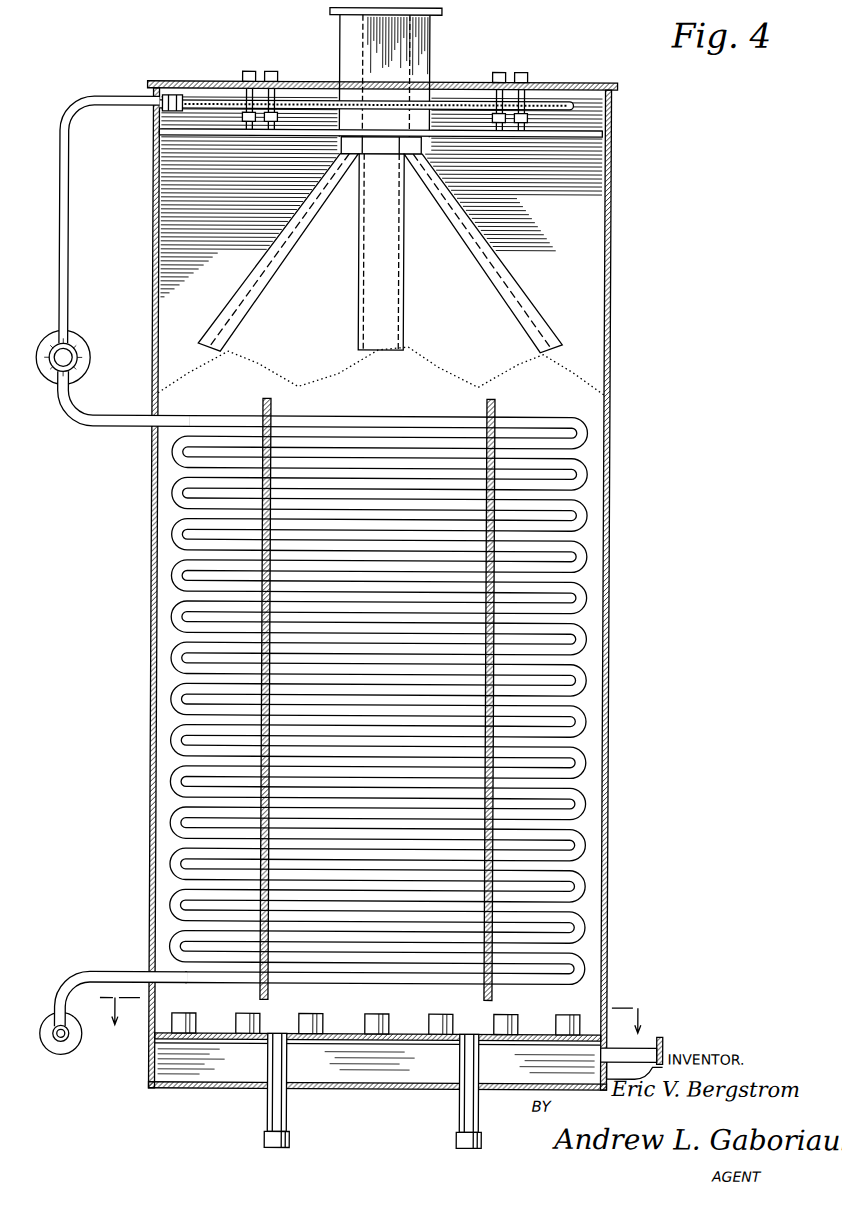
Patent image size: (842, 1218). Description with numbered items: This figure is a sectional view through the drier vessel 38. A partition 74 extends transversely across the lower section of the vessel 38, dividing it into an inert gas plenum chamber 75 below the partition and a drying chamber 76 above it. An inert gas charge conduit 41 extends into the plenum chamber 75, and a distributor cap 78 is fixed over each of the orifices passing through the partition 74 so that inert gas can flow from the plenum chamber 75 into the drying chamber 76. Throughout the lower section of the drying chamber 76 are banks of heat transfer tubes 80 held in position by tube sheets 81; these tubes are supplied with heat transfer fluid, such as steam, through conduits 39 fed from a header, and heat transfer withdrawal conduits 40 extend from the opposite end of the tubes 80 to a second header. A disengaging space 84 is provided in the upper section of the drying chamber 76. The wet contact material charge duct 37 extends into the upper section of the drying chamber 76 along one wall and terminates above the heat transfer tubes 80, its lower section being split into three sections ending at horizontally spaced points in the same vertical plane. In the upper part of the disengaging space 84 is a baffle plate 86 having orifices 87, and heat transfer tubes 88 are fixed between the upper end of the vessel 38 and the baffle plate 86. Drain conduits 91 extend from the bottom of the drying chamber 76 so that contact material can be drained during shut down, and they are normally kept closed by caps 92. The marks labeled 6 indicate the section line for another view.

The wet contact material charge duct 37 is at (431, 52).
The vessel 38 is at (153, 575).
The conduits 39 is at (127, 430).
The heat transfer withdrawal conduits 40 is at (130, 950).
The inert gas charge conduit 41 is at (650, 1040).
The section line 6- 6 is at (370, 1018).
The partition 74 is at (223, 1034).
The inert gas plenum chamber 75 is at (233, 1068).
The drying chamber 76 is at (153, 682).
The distributor cap 78 is at (323, 1030).
The heat transfer tubes 80 is at (176, 496).
The tube sheets 81 is at (274, 404).
The disengaging space 84 is at (154, 259).
The baffle plate 86 is at (602, 134).
The orifices 87 is at (440, 136).
The heat transfer tubes 88 is at (572, 108).
The drain conduits 91 is at (274, 1127).
The caps 92 is at (272, 1147).